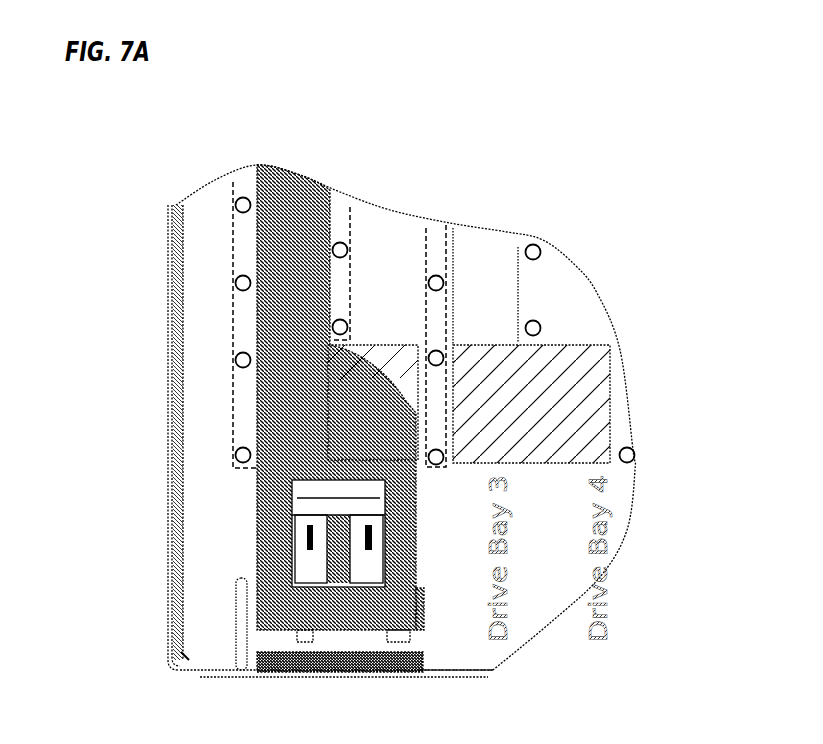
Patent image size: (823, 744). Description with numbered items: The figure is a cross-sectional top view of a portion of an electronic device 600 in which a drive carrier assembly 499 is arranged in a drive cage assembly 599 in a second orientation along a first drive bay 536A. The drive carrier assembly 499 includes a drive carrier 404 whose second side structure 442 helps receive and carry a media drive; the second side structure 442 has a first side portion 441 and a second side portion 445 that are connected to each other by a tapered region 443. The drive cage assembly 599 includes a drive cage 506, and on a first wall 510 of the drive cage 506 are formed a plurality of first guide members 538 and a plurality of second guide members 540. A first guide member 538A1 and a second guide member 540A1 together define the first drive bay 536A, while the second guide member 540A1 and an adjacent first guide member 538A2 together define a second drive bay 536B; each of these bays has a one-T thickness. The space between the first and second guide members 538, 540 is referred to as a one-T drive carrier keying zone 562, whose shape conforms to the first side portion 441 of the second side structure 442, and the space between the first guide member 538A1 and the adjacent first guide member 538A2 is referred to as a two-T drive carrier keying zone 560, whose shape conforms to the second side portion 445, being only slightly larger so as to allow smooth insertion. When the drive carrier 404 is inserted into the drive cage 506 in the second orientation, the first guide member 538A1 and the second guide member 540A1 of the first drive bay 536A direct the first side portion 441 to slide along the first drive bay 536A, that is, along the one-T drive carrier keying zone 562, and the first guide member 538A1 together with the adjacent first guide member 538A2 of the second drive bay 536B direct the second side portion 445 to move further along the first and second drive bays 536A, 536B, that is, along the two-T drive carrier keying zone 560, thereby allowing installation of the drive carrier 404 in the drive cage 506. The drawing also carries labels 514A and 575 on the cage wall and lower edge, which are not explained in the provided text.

The electronic device 600 is at (648, 45).
The drive carrier 404 is at (336, 216).
The first guide members 538 is at (354, 274).
The first guide member 538A1 is at (232, 212).
The adjacent first guide member 538A2 is at (428, 233).
The second guide members 540 is at (389, 242).
The second guide member 540A1 is at (350, 208).
The second side structure 442 is at (406, 366).
The tapered region 443 is at (370, 380).
The 1T drive carrier keying zone 562 is at (418, 352).
The 2T drive carrier keying zone 560 is at (490, 346).
The drive cage 506 is at (167, 245).
The side panel 514A is at (177, 290).
The first side portion 441 is at (280, 307).
The first wall 510 is at (154, 437).
The drive carrier assembly 499 is at (252, 496).
The second side portion 445 is at (280, 568).
The first drive bay 536A is at (285, 636).
The second drive bay 536B is at (365, 636).
The bottom edge 575 is at (465, 680).
The drive cage assembly 599 is at (603, 299).